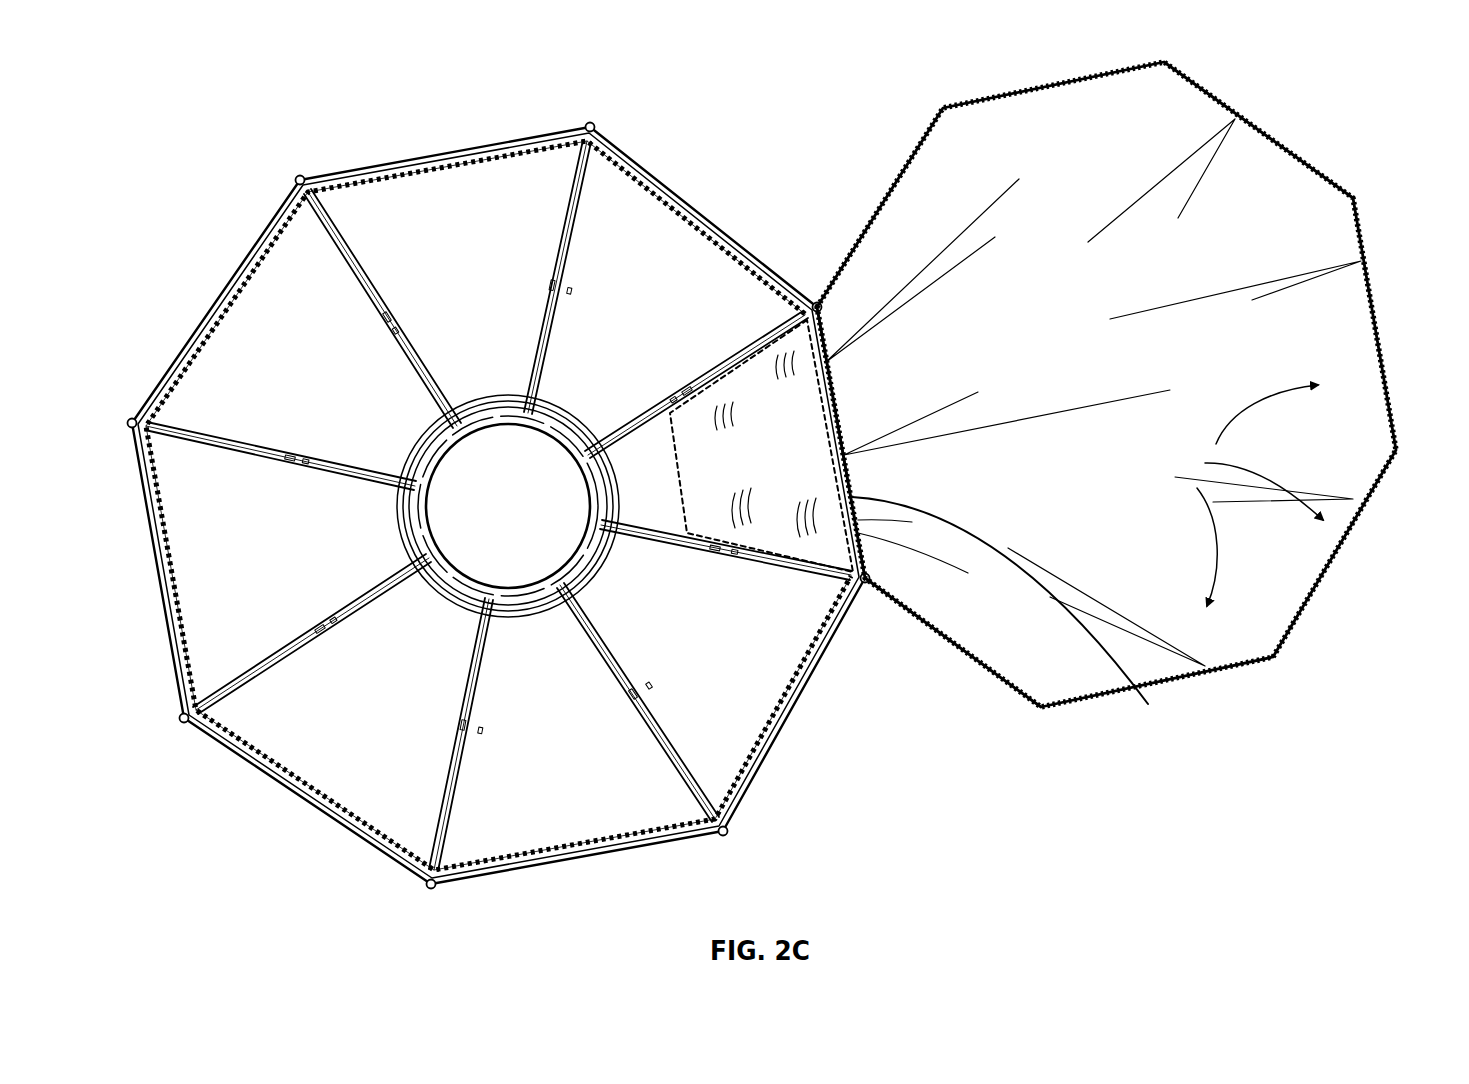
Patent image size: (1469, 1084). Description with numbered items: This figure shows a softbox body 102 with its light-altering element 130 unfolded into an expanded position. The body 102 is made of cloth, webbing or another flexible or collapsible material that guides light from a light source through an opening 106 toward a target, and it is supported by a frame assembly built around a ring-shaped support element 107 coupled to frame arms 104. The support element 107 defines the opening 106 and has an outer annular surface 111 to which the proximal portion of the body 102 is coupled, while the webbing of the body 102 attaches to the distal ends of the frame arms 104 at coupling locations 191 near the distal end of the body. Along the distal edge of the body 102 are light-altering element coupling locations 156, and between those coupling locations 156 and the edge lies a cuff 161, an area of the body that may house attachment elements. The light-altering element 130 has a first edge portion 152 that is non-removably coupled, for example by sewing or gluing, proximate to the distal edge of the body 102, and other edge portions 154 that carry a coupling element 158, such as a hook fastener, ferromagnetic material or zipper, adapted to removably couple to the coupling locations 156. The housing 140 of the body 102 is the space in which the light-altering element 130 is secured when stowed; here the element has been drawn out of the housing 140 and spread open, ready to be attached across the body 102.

The body 102 is at (546, 183).
The frame arms 104 is at (358, 263).
The opening 106 is at (491, 519).
The support element 107 is at (578, 436).
The outer annular surface 111 is at (478, 393).
The light-altering element 130 is at (1093, 372).
The housing 140 is at (741, 476).
The first edge portion 152 is at (1142, 701).
The other edge portions 154 is at (1241, 495).
The light-altering element coupling locations 156 is at (370, 187).
The coupling element 158 is at (954, 100).
The cuff 161 is at (200, 330).
The coupling locations 191 is at (289, 176).